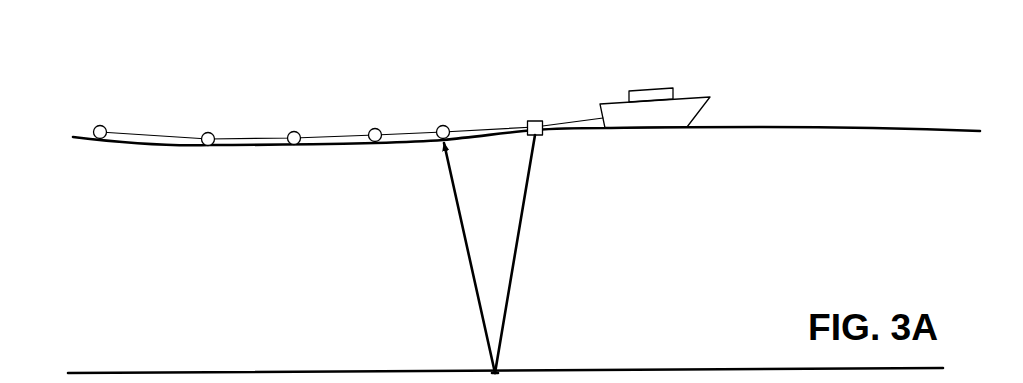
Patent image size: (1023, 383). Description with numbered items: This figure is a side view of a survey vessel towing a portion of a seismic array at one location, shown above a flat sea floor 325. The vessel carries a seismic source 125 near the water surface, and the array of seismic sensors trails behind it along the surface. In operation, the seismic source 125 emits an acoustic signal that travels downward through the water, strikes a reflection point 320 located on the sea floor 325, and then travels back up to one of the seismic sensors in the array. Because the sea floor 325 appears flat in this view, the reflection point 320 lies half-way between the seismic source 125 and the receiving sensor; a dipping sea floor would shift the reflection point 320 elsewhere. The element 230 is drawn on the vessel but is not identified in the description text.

The seismic source 125 is at (536, 120).
The vessel cabin 230 is at (640, 88).
The reflection point 320 is at (513, 360).
The sea floor 325 is at (247, 372).